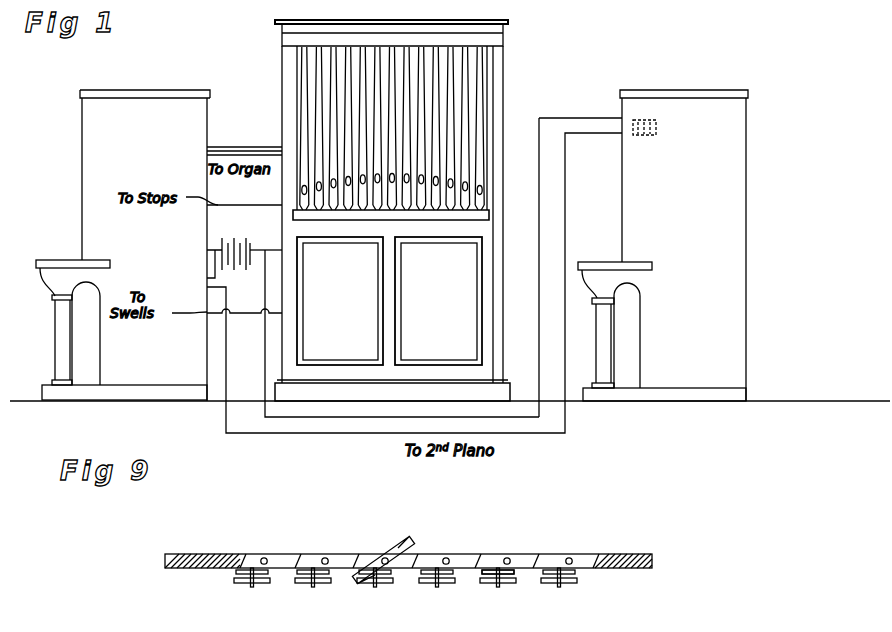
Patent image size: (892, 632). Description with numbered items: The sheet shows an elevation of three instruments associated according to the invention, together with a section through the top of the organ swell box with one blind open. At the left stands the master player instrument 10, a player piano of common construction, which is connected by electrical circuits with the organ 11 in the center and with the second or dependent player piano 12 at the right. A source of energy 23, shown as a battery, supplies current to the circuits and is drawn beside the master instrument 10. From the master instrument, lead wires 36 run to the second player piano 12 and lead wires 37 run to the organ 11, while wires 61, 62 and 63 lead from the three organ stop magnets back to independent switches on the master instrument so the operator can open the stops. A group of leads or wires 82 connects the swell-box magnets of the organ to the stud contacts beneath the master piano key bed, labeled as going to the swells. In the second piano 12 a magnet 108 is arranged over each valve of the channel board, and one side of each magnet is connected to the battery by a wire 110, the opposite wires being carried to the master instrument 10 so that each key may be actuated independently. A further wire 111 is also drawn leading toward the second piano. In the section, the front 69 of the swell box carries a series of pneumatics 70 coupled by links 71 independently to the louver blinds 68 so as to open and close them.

In FIG. 1, the master player instrument 10 is at (123, 245).
In FIG. 1, the organ 11 is at (505, 88).
In FIG. 1, the second or dependent player piano 12 is at (663, 245).
In FIG. 1, the source of energy 23 is at (244, 251).
In FIG. 1, the lead wires to second player piano 36 is at (346, 437).
In FIG. 1, the lead wires to organ 37 is at (246, 205).
In FIG. 1, the stop magnet wire 61 is at (224, 141).
In FIG. 1, the stop magnet wire 62 is at (236, 151).
In FIG. 1, the stop magnet wire 63 is at (254, 155).
In FIG. 1, the leads or wires to swell magnets 82 is at (249, 313).
In FIG. 1, the magnet 108 is at (660, 129).
In FIG. 1, the wire 110 is at (590, 118).
In FIG. 1, the wire 111 is at (455, 420).
In FIG. 9, the louver blinds 68 is at (398, 548).
In FIG. 9, the front of the swell box 69 is at (240, 556).
In FIG. 9, the pneumatics 70 is at (293, 586).
In FIG. 9, the links 71 is at (495, 585).